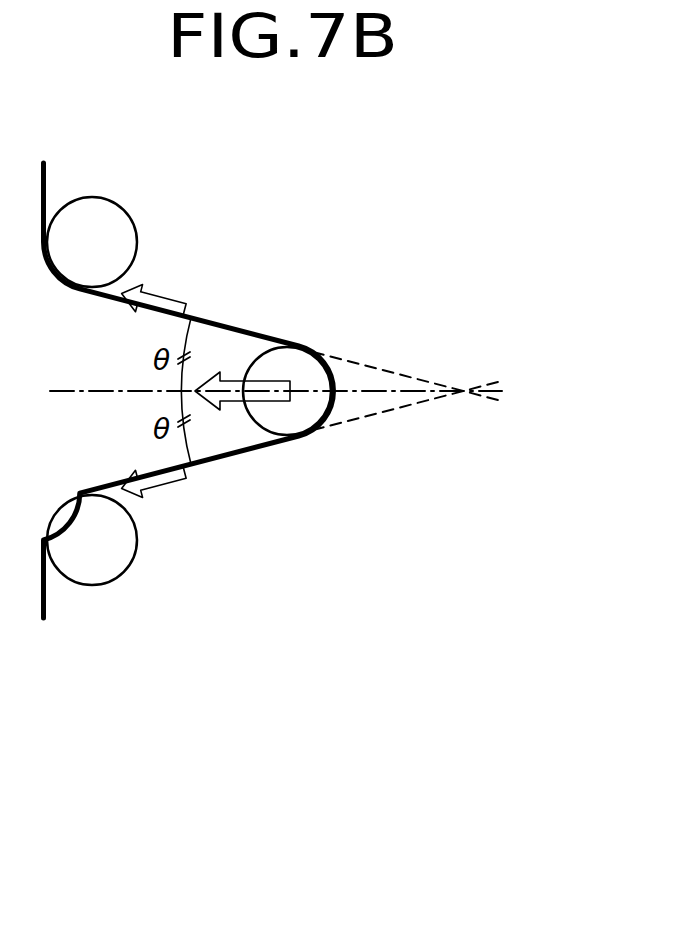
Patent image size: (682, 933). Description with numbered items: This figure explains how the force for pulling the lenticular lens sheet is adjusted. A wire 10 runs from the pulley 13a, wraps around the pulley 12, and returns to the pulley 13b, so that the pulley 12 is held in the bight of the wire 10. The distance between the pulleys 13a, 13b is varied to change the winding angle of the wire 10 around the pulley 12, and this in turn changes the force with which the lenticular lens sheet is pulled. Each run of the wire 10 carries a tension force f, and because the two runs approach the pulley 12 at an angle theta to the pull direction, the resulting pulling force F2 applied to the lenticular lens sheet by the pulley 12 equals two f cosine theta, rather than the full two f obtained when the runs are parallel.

The wire 10 is at (237, 457).
The pulley 12 is at (302, 368).
The pulley 13a is at (92, 215).
The pulley 13b is at (92, 567).
The pulling force F2 is at (265, 387).
The wire tension force f is at (164, 310).